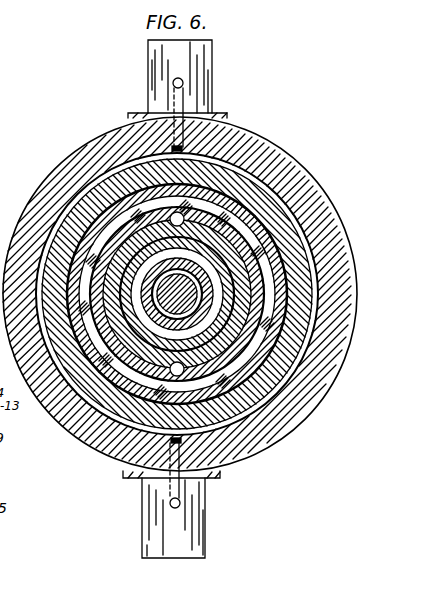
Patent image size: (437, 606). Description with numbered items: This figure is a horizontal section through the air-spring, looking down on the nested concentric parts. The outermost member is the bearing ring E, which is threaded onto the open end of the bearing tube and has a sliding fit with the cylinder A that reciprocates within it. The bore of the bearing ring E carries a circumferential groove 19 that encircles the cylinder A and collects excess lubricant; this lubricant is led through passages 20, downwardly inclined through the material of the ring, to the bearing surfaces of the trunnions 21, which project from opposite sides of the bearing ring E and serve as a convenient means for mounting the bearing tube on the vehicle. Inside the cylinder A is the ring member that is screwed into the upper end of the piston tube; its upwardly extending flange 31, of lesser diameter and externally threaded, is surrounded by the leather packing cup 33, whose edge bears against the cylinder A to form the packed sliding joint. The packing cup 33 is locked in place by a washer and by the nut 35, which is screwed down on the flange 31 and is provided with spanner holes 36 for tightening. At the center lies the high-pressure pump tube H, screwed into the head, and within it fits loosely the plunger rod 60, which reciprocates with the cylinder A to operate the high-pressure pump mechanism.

The bearing ring E is at (279, 143).
The circumferential groove 19 is at (93, 183).
The leather packing cup 33 is at (218, 192).
The nut 35 is at (141, 196).
The cylinder A is at (270, 352).
The upwardly extending flange 31 is at (221, 243).
The high-pressure pump tube H is at (300, 348).
The plunger rod 60 is at (240, 400).
The spanner holes 36 is at (125, 408).
The passages 20 is at (183, 88).
The trunnions 21 is at (212, 66).